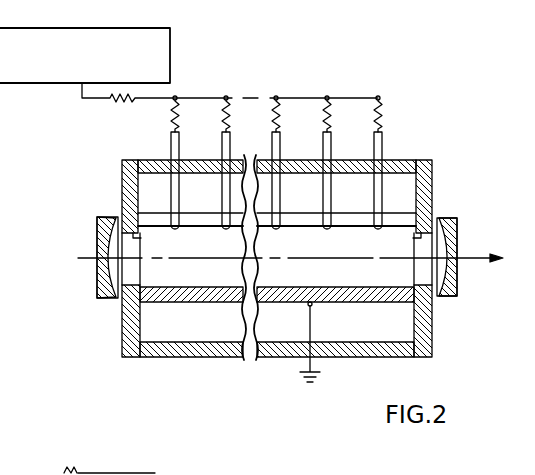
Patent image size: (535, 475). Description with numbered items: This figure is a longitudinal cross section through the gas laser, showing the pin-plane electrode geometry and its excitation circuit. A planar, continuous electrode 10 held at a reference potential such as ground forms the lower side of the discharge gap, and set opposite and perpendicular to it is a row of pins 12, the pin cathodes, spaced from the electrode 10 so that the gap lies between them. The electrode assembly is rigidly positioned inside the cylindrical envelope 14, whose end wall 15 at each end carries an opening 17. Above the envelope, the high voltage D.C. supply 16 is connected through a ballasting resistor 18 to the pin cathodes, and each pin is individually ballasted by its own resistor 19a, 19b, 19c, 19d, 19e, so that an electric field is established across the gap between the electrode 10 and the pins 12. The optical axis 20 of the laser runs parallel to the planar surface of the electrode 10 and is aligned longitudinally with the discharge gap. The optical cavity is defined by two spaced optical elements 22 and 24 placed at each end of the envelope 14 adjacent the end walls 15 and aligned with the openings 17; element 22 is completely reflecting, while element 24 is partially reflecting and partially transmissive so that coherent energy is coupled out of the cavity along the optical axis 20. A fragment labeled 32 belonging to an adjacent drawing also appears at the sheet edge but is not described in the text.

The electrode 10 is at (198, 304).
The pins 12 is at (366, 193).
The envelope 14 is at (198, 358).
The end wall 15 is at (122, 180).
The high voltage D.C. supply 16 is at (65, 27).
The opening 17 is at (135, 238).
The ballasting resistor 18 is at (123, 103).
The resistor 19a is at (180, 114).
The resistor 19b is at (231, 114).
The resistor 19c is at (281, 114).
The resistor 19d is at (332, 114).
The resistor 19e is at (383, 114).
The optical axis 20 is at (87, 257).
The optical element 22 is at (107, 300).
The optical element 24 is at (443, 298).
The resistor 32 is at (80, 472).